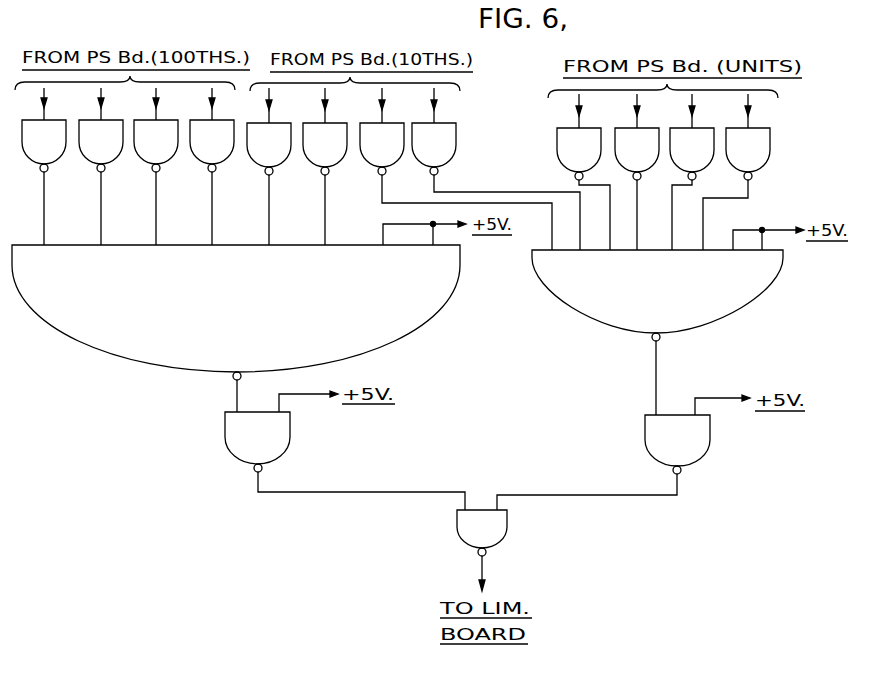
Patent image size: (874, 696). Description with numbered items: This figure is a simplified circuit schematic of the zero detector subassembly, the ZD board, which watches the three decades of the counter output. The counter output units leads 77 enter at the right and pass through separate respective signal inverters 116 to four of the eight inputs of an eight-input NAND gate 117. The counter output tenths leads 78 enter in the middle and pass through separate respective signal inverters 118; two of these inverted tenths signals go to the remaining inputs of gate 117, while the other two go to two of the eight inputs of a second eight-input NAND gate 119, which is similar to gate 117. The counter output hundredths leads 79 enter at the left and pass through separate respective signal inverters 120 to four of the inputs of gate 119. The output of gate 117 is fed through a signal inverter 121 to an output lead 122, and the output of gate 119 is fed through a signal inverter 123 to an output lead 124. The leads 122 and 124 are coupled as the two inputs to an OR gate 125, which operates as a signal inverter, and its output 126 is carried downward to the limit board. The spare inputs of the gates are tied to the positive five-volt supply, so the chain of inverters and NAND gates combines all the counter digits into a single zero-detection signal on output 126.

The counter output units leads 77 is at (637, 122).
The counter output tenths leads 78 is at (325, 116).
The counter output hundredths leads 79 is at (101, 114).
The signal inverters 116 is at (760, 156).
The eight-input NAND gate 117 is at (764, 289).
The signal inverters 118 is at (446, 151).
The eight-input NAND gate 119 is at (72, 331).
The signal inverters 120 is at (224, 148).
The signal inverter 121 is at (664, 439).
The output lead 122 is at (572, 495).
The signal inverter 123 is at (245, 436).
The output lead 124 is at (346, 492).
The OR gate 125 is at (453, 523).
The output 126 is at (484, 568).